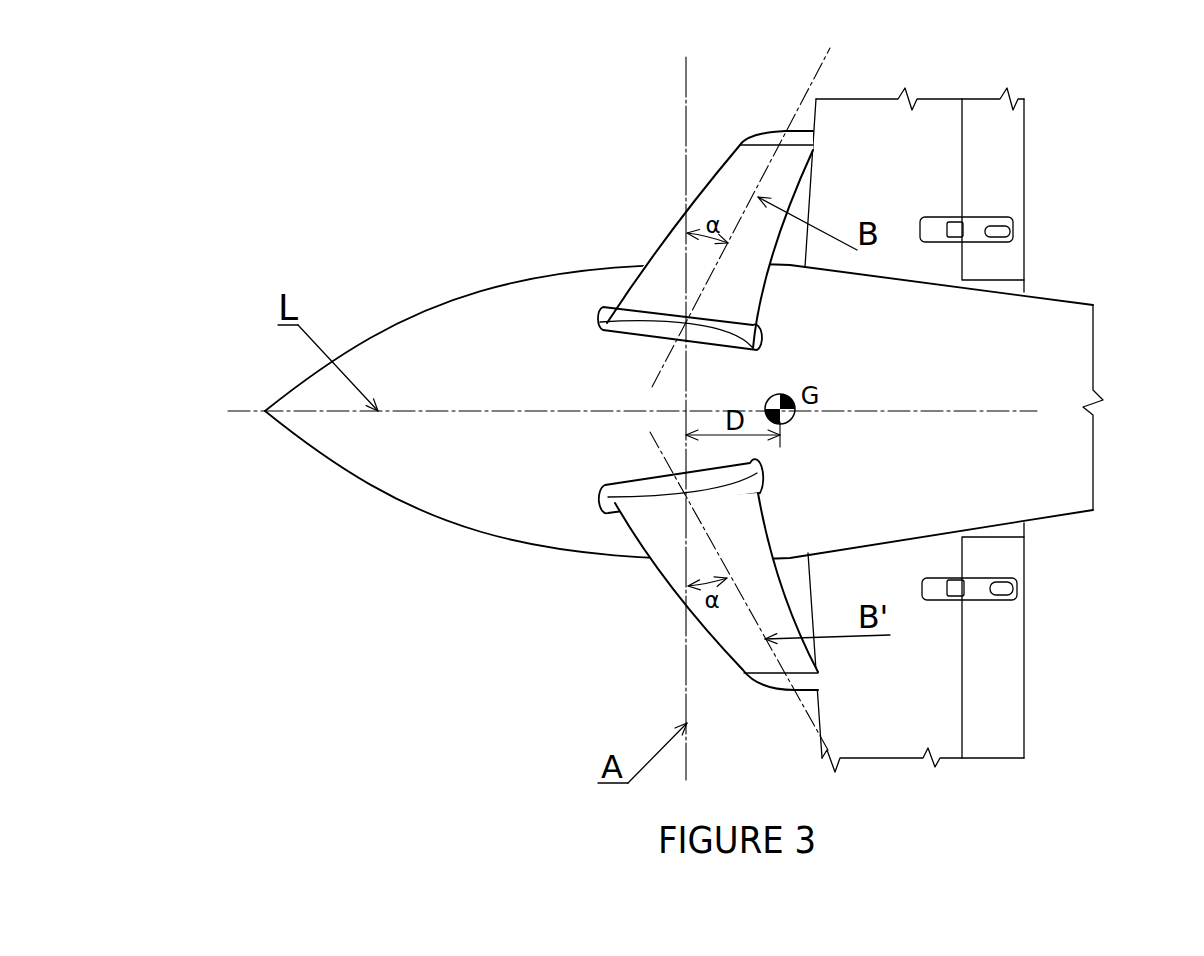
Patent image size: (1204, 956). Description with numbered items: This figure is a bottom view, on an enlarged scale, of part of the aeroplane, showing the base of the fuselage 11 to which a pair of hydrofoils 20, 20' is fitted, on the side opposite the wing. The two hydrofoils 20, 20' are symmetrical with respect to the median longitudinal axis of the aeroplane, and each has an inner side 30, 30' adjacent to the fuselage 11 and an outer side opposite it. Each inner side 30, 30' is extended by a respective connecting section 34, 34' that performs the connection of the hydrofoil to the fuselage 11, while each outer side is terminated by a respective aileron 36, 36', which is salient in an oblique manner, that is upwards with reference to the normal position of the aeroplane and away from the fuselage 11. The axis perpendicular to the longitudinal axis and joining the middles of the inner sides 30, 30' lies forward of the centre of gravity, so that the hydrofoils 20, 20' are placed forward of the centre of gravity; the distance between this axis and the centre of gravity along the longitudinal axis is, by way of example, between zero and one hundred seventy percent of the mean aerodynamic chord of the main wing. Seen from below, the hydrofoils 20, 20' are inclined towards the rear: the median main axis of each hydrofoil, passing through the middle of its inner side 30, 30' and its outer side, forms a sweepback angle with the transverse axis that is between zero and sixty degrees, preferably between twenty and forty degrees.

The fuselage 11 is at (958, 360).
The hydrofoil 20 is at (679, 235).
The hydrofoil 20' is at (653, 601).
The inner side 30 is at (621, 288).
The inner side 30' is at (637, 531).
The connecting section 34 is at (721, 320).
The connecting section 34' is at (743, 502).
The aileron 36 is at (760, 114).
The aileron 36' is at (763, 725).